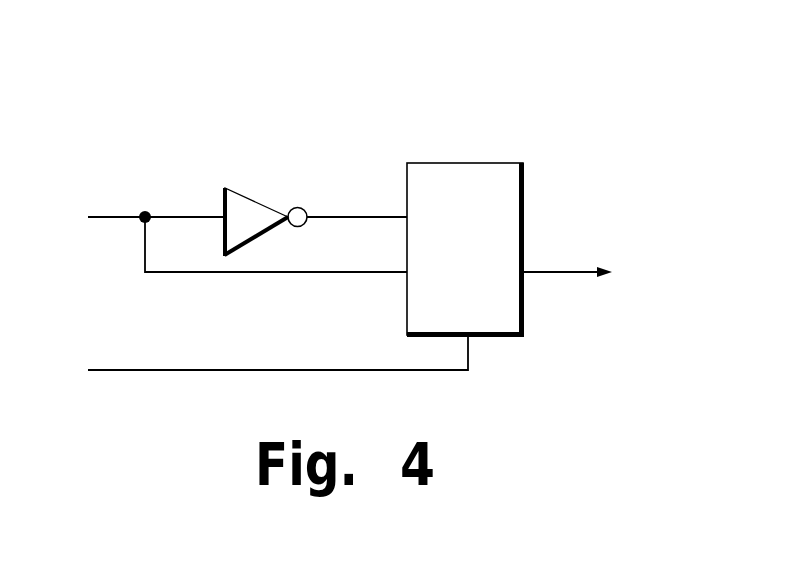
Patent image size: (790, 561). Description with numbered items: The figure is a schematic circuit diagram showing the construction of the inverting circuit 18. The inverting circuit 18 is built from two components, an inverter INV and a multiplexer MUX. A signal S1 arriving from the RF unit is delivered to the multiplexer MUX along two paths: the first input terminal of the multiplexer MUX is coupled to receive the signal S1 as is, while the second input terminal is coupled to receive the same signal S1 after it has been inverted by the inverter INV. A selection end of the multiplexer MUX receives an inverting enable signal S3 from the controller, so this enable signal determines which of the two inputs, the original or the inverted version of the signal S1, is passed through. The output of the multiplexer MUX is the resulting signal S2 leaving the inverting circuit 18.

The inverting circuit 18 is at (364, 77).
The signal S1 is at (231, 235).
The output signal S2 is at (585, 274).
The inverting enable signal S3 is at (262, 359).
The inverter INV is at (227, 188).
The multiplexer MUX is at (445, 163).